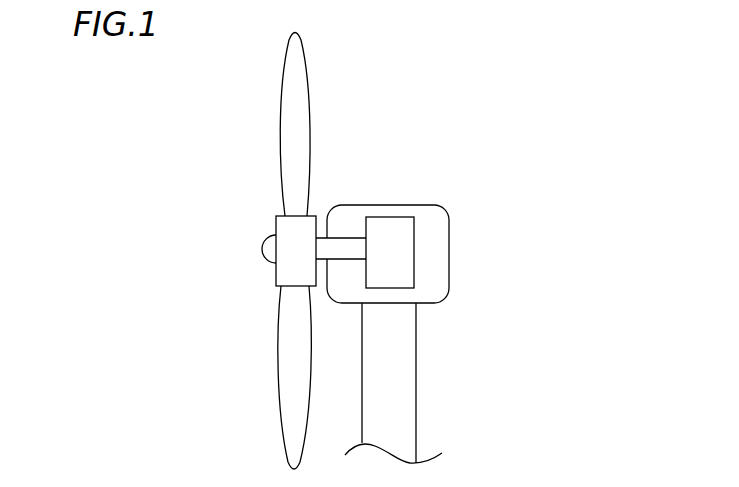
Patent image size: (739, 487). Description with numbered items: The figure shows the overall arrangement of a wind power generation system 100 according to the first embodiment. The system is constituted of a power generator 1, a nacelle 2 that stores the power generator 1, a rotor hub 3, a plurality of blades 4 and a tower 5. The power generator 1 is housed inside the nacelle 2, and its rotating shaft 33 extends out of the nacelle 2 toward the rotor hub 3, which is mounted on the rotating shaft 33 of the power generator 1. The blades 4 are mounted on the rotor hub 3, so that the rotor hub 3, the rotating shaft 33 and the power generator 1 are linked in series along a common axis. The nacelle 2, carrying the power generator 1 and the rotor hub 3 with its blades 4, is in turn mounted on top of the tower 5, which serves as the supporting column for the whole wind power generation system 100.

The wind power generation system 100 is at (541, 151).
The power generator 1 is at (390, 216).
The nacelle 2 is at (426, 205).
The rotor hub 3 is at (276, 227).
The rotating shaft 33 is at (338, 237).
The blade 4 is at (281, 127).
The tower 5 is at (416, 361).